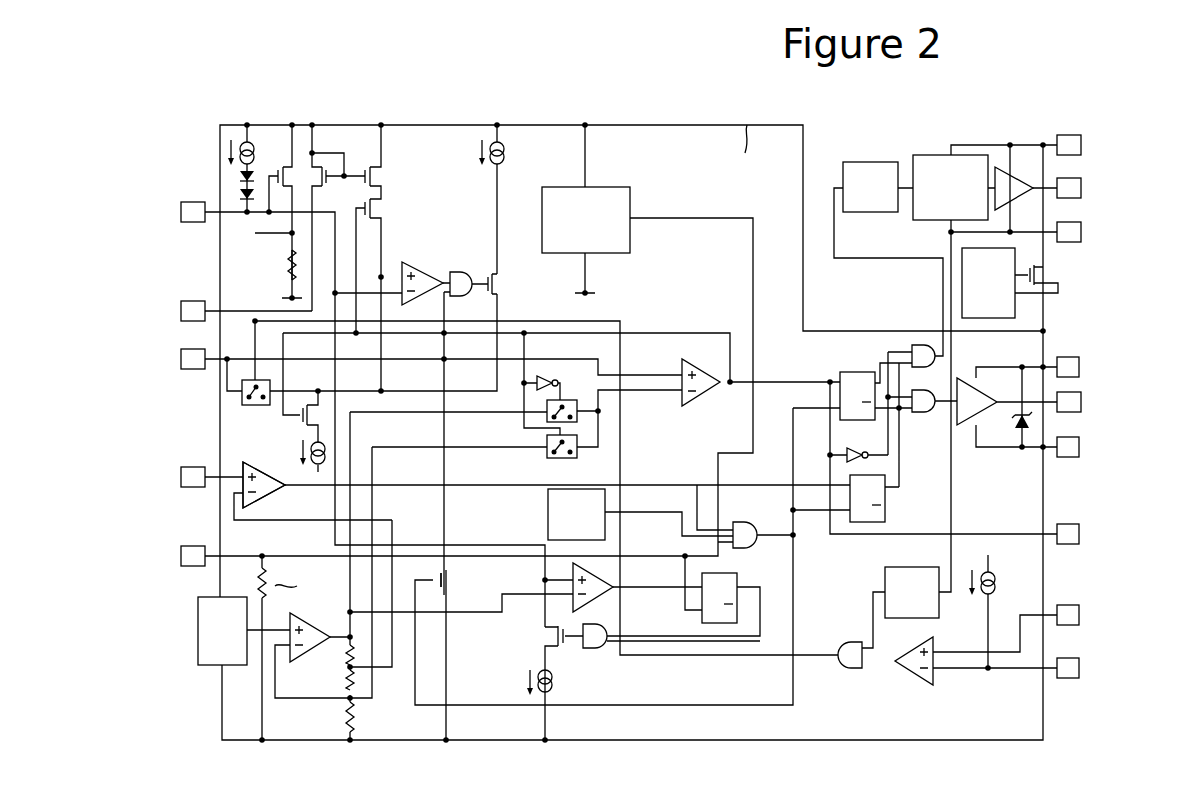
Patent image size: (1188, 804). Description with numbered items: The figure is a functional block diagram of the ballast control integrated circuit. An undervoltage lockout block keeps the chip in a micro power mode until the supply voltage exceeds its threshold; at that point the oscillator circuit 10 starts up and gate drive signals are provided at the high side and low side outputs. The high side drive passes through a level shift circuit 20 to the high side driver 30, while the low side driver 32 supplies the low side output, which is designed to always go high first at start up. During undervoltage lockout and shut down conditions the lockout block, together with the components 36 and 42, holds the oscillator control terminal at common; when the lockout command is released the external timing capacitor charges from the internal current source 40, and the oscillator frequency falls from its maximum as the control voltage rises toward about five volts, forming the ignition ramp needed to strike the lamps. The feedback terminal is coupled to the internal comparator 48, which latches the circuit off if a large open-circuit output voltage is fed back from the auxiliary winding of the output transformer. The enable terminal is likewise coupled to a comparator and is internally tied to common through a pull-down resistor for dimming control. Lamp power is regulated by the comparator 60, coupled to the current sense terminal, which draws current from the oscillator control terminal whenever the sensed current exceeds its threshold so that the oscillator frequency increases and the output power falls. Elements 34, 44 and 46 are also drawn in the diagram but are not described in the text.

The oscillator circuit 10 is at (393, 200).
The level shift circuit 20 is at (890, 162).
The high side driver 30 is at (1000, 175).
The low side driver 32 is at (972, 420).
The comparator 34 is at (709, 390).
The component holding VCO at COM 36 is at (745, 554).
The internal current source 40 is at (560, 684).
The component holding VCO at COM 42 is at (455, 581).
The switch 44 is at (258, 407).
The resistor 46 is at (284, 266).
The internal comparator 48 is at (268, 505).
The comparator 60 is at (902, 668).